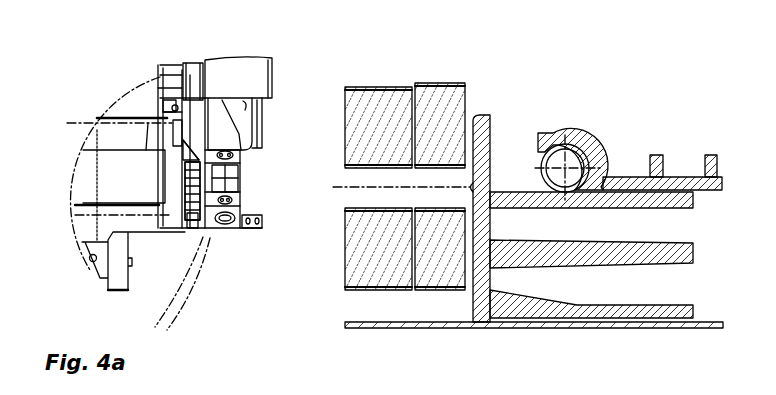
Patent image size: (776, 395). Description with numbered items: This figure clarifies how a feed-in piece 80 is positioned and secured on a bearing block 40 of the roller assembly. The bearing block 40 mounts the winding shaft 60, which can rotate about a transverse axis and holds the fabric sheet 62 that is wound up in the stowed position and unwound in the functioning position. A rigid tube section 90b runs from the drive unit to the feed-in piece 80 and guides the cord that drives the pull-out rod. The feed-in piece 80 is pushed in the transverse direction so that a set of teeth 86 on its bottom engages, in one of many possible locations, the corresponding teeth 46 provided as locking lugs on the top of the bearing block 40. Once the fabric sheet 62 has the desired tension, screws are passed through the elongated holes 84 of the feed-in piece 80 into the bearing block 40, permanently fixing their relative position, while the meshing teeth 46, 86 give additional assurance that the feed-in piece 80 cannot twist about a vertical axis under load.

The fabric sheet 62 is at (145, 102).
The feed-in piece 80 is at (238, 154).
The elongated holes 84 is at (243, 158).
The bearing block 40 is at (223, 221).
The winding shaft 60 is at (153, 198).
The tube section 90b is at (185, 297).
The teeth of the bearing block 46 is at (622, 193).
The set of teeth 86 is at (705, 190).